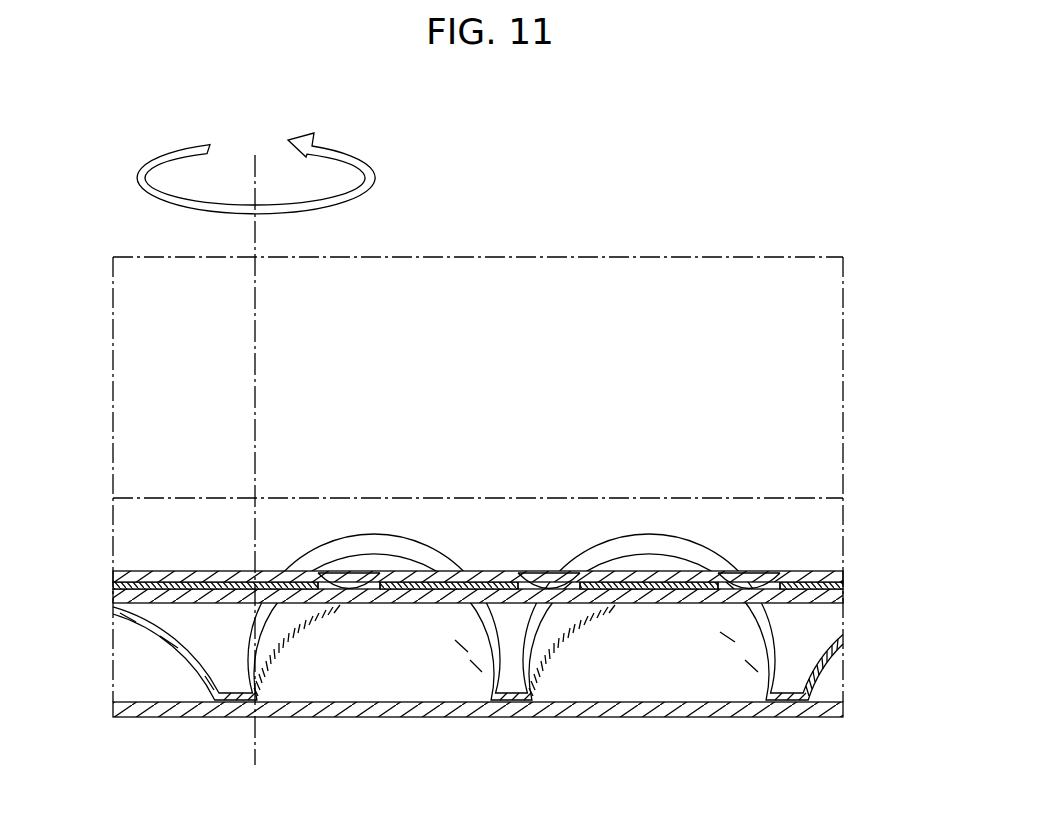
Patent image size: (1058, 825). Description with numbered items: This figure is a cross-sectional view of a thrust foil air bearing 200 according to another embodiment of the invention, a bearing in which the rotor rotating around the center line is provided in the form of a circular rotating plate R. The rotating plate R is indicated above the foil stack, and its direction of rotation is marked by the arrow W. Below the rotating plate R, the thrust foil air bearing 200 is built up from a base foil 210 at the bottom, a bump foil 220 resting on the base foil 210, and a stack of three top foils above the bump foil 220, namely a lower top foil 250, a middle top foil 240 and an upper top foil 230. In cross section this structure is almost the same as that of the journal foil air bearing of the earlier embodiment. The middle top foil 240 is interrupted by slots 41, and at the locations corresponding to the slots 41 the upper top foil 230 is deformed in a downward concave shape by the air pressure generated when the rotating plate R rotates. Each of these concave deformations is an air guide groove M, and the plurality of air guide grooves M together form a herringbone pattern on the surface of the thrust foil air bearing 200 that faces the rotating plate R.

The thrust foil air bearing 200 is at (118, 213).
The base foil 210 is at (835, 708).
The bump foil 220 is at (830, 663).
The upper top foil 230 is at (837, 572).
The middle top foil 240 is at (832, 585).
The lower top foil 250 is at (837, 597).
The slot 41 is at (320, 583).
The air guide groove M is at (347, 572).
The rotating plate R is at (710, 283).
The rotation direction W is at (343, 151).